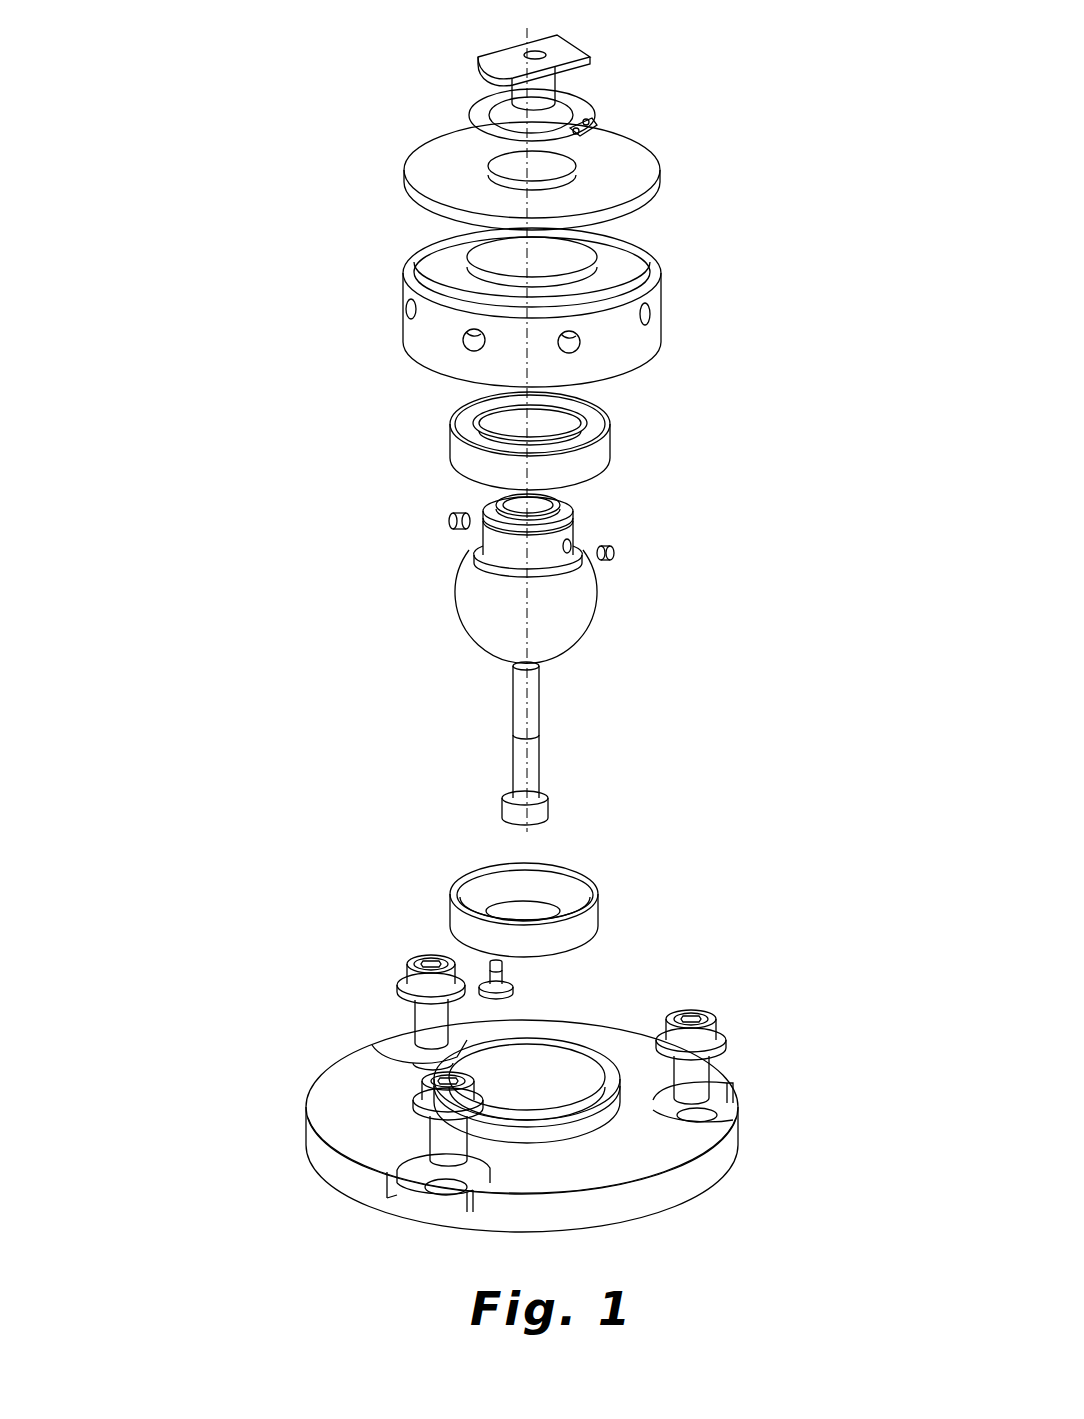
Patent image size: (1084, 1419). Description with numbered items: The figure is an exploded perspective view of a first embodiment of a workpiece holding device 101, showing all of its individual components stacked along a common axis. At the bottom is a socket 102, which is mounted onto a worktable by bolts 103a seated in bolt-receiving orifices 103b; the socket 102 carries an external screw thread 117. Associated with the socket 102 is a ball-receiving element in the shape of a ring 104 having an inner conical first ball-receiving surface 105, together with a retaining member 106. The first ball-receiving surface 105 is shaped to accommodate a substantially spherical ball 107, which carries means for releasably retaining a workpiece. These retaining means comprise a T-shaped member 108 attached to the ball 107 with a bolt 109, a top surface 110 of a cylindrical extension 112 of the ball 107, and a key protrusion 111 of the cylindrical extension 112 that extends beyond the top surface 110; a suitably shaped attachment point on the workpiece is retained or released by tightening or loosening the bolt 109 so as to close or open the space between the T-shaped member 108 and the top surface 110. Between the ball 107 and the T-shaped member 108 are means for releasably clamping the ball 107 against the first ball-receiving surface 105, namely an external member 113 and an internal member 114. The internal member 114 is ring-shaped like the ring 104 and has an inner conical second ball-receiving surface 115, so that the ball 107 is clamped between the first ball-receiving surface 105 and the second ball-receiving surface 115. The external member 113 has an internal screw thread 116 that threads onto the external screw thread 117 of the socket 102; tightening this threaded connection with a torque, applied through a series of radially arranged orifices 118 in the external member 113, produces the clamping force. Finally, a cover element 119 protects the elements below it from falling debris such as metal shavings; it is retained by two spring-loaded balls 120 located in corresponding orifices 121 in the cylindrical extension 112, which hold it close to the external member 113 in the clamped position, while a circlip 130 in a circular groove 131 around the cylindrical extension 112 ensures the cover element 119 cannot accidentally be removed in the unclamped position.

The workpiece holding device 101 is at (400, 70).
The socket 102 is at (733, 861).
The bolts 103a is at (415, 1032).
The bolt-receiving orifices 103b is at (440, 1190).
The ring 104 is at (447, 913).
The inner conical first ball-receiving surface 105 is at (497, 886).
The retaining member 106 is at (482, 988).
The ball 107 is at (572, 632).
The T-shaped member 108 is at (565, 45).
The bolt 109 is at (530, 783).
The top surface 110 is at (568, 513).
The key protrusion 111 is at (587, 505).
The cylindrical extension 112 is at (574, 537).
The external member 113 is at (455, 364).
The internal member 114 is at (488, 467).
The inner conical second ball-receiving surface 115 is at (490, 421).
The internal screw thread 116 is at (503, 262).
The external screw thread 117 is at (555, 1137).
The radially arranged orifices 118 is at (405, 308).
The cover element 119 is at (655, 170).
The spring-loaded balls 120 is at (614, 560).
The orifices 121 is at (594, 576).
The circlip 130 is at (592, 100).
The circular groove 131 is at (480, 527).